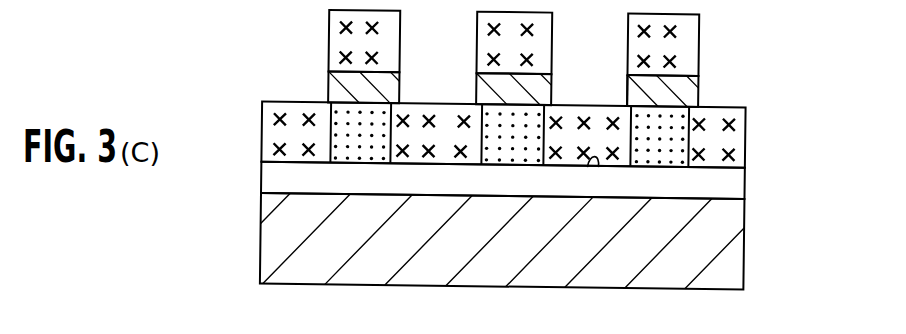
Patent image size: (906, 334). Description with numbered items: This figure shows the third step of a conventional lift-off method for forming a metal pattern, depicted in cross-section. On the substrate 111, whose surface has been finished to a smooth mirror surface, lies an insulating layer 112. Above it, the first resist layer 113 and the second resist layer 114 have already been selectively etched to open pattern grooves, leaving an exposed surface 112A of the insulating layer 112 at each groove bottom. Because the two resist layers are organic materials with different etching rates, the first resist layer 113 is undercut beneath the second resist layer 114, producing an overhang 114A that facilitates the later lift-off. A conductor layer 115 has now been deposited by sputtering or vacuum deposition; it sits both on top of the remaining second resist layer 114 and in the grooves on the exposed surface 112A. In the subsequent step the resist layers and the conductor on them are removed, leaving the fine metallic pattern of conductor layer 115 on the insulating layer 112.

The substrate 111 is at (735, 252).
The insulating layer 112 is at (738, 183).
The exposed surface 112A is at (588, 167).
The first resist layer 113 is at (670, 138).
The second resist layer 114 is at (688, 90).
The overhang 114A is at (625, 92).
The conductor layer 115 is at (683, 52).